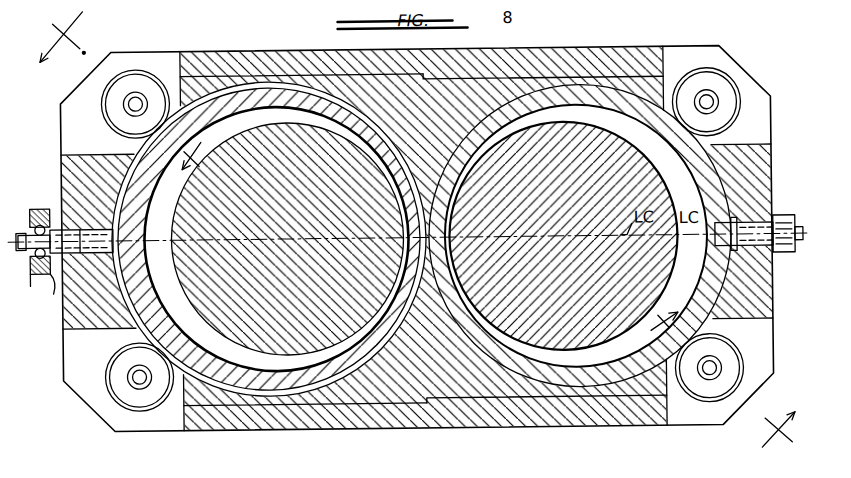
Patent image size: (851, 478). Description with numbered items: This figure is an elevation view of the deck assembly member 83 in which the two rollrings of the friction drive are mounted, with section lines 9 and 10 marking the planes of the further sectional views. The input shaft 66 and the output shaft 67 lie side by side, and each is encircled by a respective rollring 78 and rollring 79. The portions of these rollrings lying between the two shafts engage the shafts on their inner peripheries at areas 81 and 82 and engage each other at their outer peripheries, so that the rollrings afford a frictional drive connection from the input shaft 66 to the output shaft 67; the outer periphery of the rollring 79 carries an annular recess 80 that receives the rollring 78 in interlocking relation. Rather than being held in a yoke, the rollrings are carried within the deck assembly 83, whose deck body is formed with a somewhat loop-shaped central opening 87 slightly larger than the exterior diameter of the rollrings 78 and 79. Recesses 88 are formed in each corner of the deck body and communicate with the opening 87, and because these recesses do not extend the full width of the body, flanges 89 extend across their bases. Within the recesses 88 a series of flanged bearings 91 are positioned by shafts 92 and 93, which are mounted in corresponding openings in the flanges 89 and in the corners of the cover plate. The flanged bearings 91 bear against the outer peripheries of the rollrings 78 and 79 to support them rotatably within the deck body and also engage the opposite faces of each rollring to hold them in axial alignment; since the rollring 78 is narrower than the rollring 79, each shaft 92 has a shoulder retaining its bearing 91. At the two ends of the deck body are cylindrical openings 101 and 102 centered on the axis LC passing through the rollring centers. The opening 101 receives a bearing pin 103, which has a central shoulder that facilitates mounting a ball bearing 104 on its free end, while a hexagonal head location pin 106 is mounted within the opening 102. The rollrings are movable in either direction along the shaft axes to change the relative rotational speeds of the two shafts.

The section line 9— 9 is at (717, 392).
The section line 10— 10 is at (124, 87).
The input shaft 66 is at (658, 194).
The output shaft 67 is at (180, 254).
The rollring 78 is at (478, 126).
The rollring 79 is at (370, 127).
The annular recess 80 is at (168, 350).
The engagement area 81 is at (457, 234).
The engagement area 82 is at (406, 233).
The deck assembly member 83 is at (302, 209).
The central opening 87 is at (545, 212).
The recesses 88 is at (425, 239).
The flanges 89 is at (127, 419).
The flanged bearings 91 is at (135, 78).
The shaft 92 is at (133, 378).
The shaft 93 is at (137, 101).
The cylindrical opening 101 is at (90, 226).
The cylindrical opening 102 is at (741, 229).
The bearing pin 103 is at (57, 265).
The ball bearing 104 is at (40, 207).
The hexagonal head location pin 106 is at (784, 219).